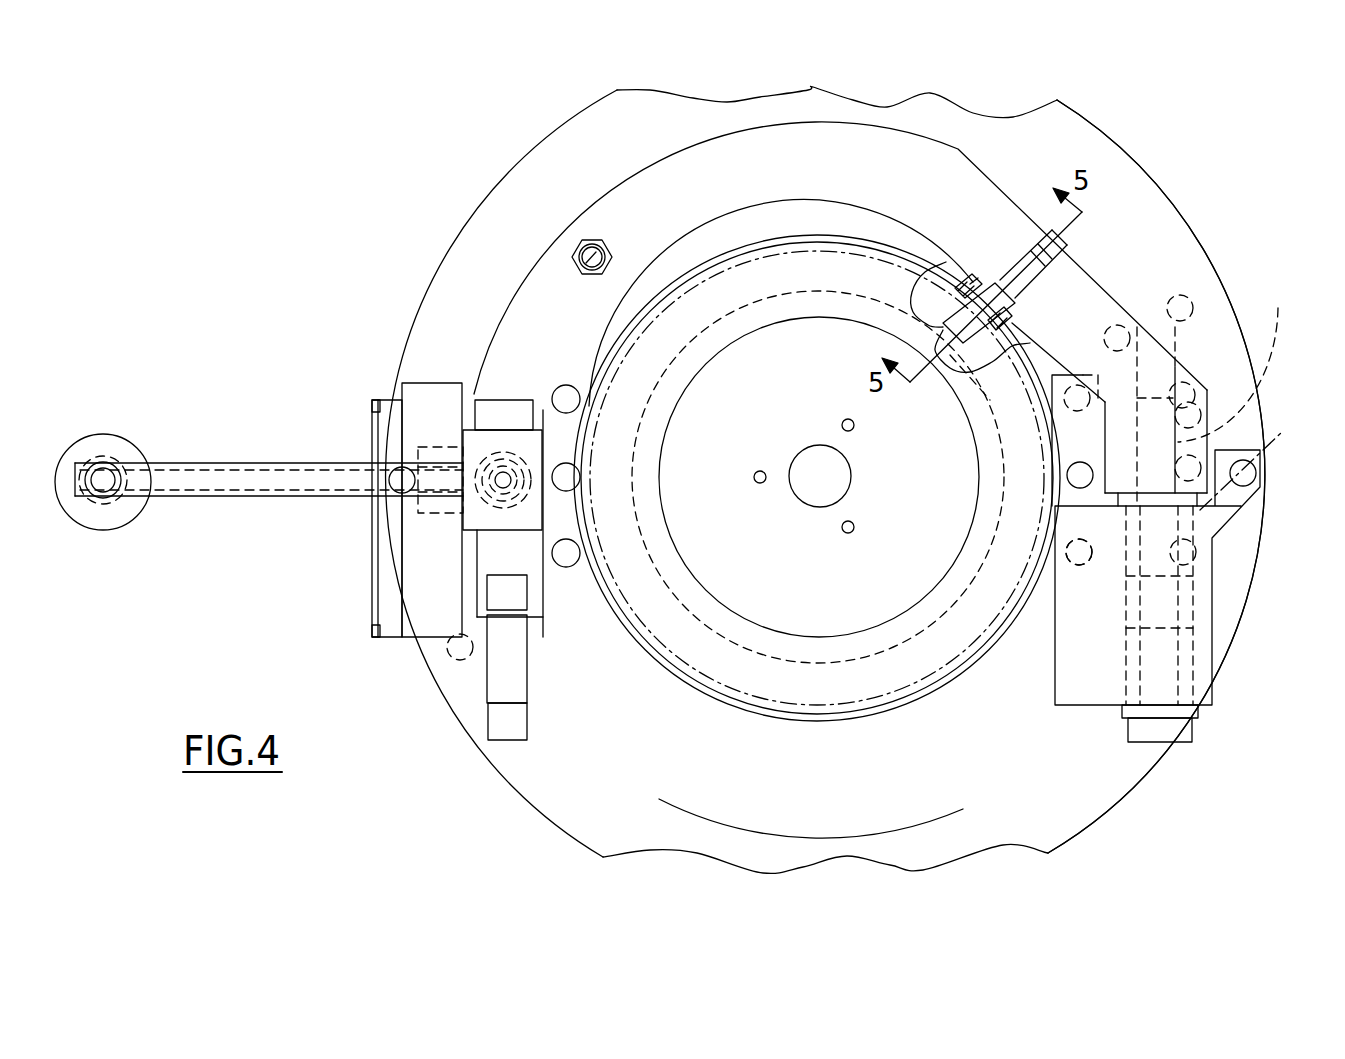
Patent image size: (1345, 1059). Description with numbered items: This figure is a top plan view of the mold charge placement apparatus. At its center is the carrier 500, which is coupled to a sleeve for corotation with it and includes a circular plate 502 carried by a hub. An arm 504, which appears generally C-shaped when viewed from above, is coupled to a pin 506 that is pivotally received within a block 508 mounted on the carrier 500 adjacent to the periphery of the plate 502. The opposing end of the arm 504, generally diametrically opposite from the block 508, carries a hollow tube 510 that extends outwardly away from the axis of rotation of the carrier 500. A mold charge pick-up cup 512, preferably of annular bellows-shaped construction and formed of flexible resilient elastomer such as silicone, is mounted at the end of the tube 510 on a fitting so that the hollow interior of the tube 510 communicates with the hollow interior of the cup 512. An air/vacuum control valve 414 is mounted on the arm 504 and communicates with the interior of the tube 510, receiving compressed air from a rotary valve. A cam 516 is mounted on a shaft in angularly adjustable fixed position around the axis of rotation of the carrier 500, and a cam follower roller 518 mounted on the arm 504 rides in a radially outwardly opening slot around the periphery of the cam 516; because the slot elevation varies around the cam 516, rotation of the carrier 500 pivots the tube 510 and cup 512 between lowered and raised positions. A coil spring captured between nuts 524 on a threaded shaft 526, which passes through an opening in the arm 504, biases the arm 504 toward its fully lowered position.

The carrier 500 is at (1162, 186).
The circular plate 502 is at (1245, 584).
The arm 504 is at (831, 112).
The pin 506 is at (1243, 364).
The block 508 is at (1198, 672).
The hollow tube 510 is at (308, 464).
The mold charge pick-up cup 512 is at (120, 522).
The cam 516 is at (774, 722).
The cam follower roller 518 is at (1026, 320).
The nuts 524 is at (578, 266).
The threaded shaft 526 is at (583, 254).
The air/vacuum control valve 414 is at (490, 540).